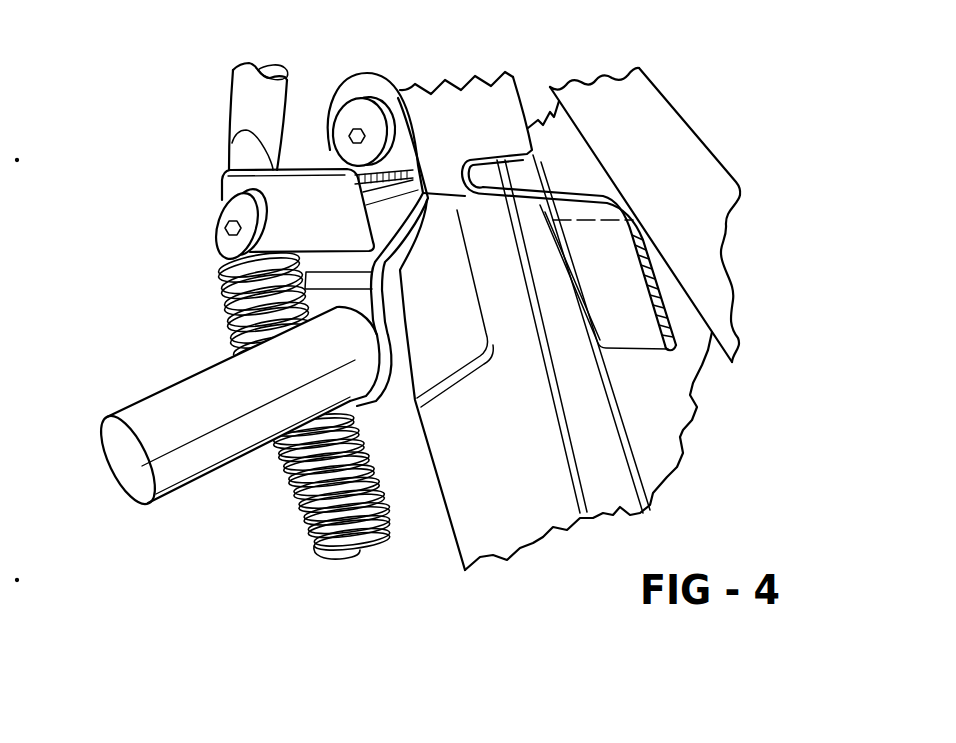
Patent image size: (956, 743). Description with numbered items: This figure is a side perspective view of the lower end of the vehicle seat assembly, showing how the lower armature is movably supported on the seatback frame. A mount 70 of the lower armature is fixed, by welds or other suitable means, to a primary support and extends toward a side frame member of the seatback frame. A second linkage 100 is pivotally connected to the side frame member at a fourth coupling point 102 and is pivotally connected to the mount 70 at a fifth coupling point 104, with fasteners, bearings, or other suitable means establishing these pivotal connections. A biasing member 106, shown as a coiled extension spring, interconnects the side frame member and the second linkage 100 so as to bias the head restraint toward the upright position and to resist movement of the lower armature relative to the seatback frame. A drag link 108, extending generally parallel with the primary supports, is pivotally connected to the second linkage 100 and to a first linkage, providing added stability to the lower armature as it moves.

The mount 70 is at (165, 410).
The second linkage 100 is at (391, 239).
The fourth coupling point 102 is at (361, 130).
The fifth coupling point 104 is at (386, 328).
The biasing member 106 is at (330, 503).
The drag link 108 is at (243, 95).